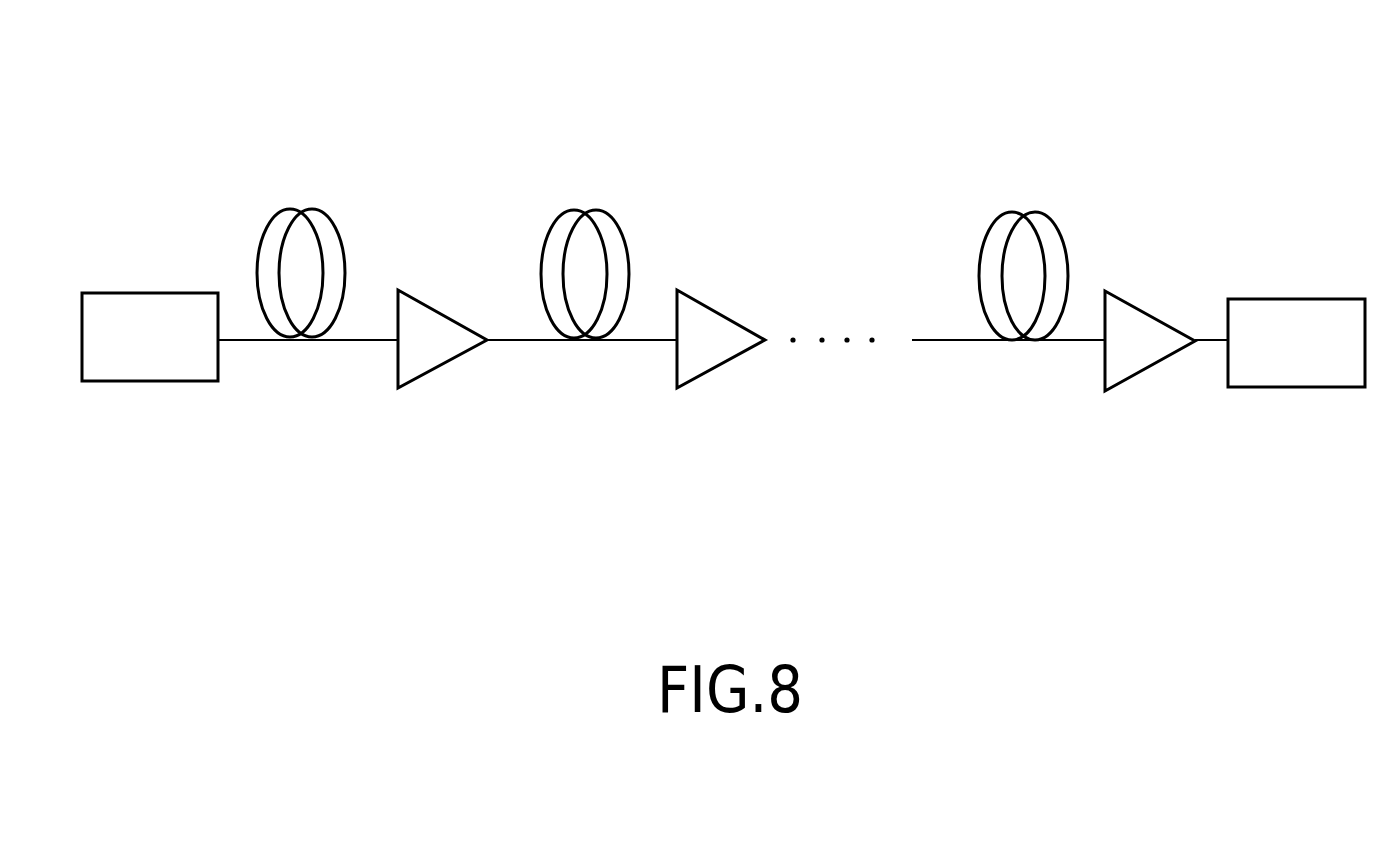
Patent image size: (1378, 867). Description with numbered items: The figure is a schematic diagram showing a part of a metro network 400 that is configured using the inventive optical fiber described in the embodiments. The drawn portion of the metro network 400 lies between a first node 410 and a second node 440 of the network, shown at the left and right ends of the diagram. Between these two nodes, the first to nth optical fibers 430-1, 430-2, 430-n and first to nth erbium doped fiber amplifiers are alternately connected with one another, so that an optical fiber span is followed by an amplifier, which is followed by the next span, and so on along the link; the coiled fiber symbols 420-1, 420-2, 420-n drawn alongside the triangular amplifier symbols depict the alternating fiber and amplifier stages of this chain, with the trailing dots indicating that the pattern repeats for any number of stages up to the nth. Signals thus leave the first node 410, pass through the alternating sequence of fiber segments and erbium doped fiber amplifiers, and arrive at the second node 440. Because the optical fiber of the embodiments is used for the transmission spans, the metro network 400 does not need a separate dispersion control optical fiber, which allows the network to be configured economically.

The metro network 400 is at (682, 42).
The node 1 410 is at (150, 293).
The optical fiber coil 1 420-1 is at (313, 210).
The optical fiber coil 2 420-2 is at (595, 212).
The optical fiber coil n 420-n is at (1033, 215).
The first optical fiber 430-1 is at (443, 313).
The second optical fiber 430-2 is at (722, 310).
The nth optical fiber 430-n is at (1152, 313).
The node 2 440 is at (1297, 298).